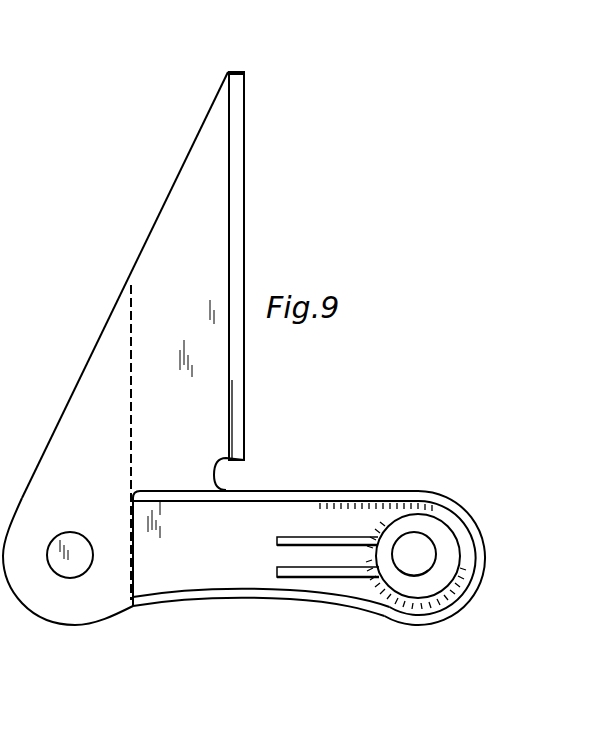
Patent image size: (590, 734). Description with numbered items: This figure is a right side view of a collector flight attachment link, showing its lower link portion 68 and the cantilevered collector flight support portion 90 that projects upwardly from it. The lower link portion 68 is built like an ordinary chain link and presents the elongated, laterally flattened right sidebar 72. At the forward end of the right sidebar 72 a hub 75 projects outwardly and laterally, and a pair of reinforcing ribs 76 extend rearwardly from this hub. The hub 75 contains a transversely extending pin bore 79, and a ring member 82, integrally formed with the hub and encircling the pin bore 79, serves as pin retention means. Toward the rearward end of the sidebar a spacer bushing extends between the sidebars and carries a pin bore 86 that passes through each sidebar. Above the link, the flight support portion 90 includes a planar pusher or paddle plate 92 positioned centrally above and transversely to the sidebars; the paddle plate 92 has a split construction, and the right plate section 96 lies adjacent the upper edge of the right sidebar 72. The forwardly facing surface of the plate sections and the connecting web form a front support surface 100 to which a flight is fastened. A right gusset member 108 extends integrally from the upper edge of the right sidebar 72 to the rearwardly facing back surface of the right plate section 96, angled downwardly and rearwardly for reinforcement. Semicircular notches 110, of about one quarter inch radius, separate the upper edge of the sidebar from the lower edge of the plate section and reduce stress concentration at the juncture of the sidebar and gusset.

The lower link portion 68 is at (329, 486).
The right sidebar 72 is at (210, 578).
The hub 75 is at (432, 522).
The reinforcing ribs 76 is at (278, 567).
The pin bore 79 is at (410, 572).
The ring member 82 is at (436, 553).
The pin bore 86 is at (75, 545).
The collector flight support portion 90 is at (115, 348).
The paddle plate 92 is at (240, 71).
The right plate section 96 is at (263, 244).
The front support surface 100 is at (245, 418).
The right gusset member 108 is at (118, 323).
The notches 110 is at (216, 478).